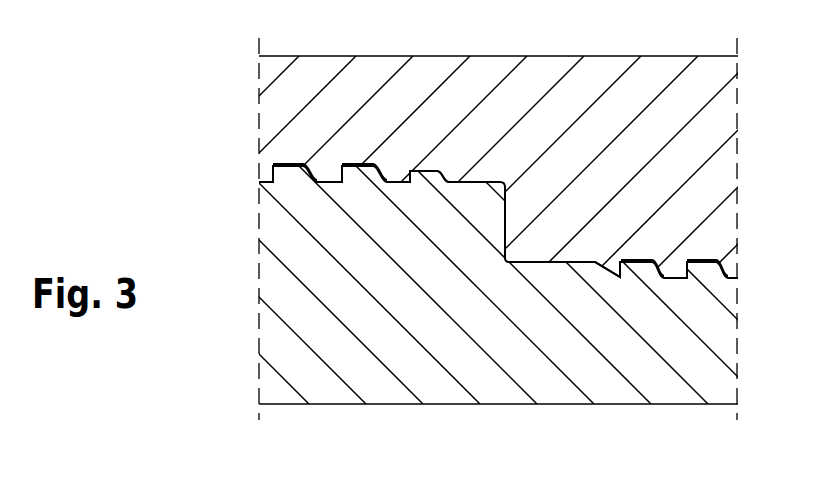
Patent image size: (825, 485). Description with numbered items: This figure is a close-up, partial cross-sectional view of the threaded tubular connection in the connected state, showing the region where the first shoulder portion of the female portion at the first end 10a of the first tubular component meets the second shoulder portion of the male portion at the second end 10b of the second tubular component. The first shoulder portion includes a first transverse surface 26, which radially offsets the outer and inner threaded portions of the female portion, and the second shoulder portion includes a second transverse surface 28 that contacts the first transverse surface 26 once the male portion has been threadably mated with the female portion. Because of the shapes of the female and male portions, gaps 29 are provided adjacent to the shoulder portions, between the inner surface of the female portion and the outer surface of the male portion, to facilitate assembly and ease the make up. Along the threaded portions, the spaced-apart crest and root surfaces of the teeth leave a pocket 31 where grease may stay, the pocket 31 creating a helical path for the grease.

The first end 10a is at (511, 100).
The second end 10b is at (506, 348).
The first transverse surface 26 is at (506, 206).
The second transverse surface 28 is at (503, 223).
The gaps 29 is at (476, 171).
The pocket 31 is at (332, 181).